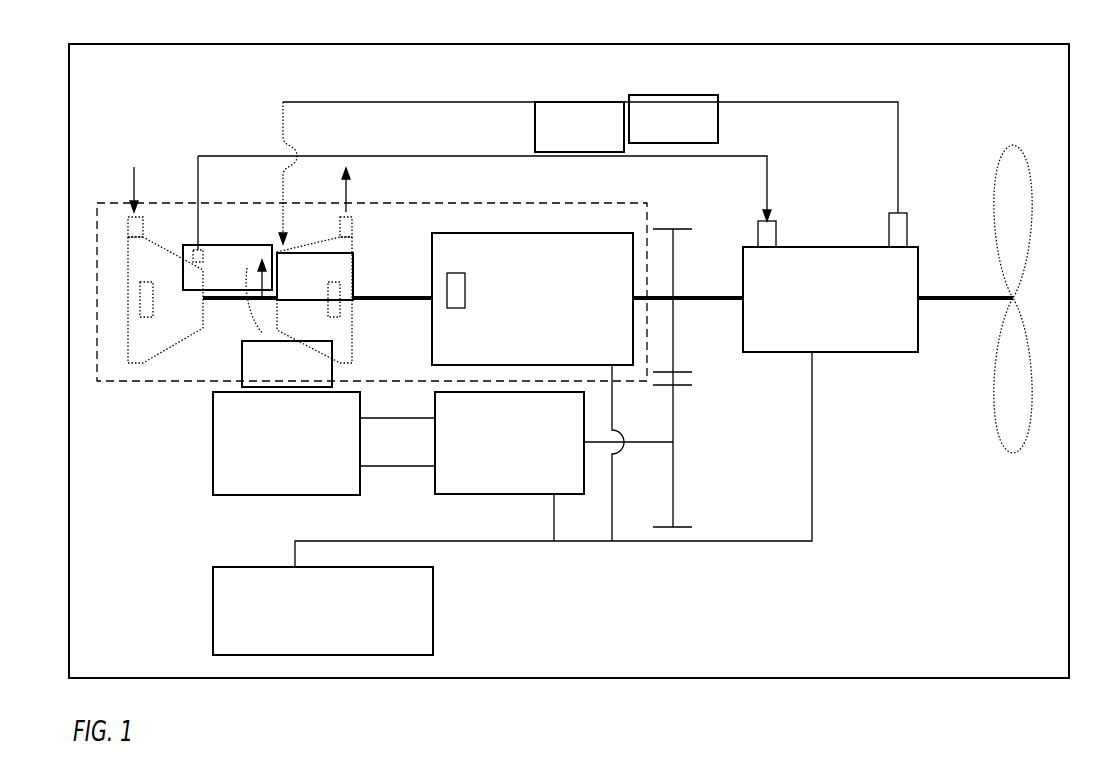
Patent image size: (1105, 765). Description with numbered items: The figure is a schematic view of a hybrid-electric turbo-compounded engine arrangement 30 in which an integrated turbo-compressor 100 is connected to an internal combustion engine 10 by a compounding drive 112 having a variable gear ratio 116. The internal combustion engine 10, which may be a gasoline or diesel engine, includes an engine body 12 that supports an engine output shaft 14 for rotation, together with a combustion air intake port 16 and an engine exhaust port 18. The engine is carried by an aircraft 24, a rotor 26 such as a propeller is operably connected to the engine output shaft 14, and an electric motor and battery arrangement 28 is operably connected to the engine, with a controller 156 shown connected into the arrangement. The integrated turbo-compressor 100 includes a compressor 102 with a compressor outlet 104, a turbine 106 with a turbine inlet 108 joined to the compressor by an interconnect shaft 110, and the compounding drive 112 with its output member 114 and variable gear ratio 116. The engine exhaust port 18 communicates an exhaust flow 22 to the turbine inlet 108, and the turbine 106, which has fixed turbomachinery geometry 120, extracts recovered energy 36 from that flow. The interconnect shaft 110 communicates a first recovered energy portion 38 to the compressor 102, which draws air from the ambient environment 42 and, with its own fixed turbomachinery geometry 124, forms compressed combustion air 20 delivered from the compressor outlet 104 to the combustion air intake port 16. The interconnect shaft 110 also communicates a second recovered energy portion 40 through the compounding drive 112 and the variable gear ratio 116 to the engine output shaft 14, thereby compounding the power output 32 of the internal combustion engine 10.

The internal combustion engine 10 is at (885, 364).
The engine body 12 is at (837, 327).
The engine output shaft 14 is at (978, 302).
The combustion air intake port 16 is at (778, 236).
The engine exhaust port 18 is at (907, 222).
The compressed combustion air 20 is at (537, 152).
The exhaust flow 22 is at (432, 102).
The aircraft 24 is at (862, 678).
The rotor 26 is at (1007, 417).
The electric motor and battery arrangement 28 is at (247, 485).
The hybrid-electric turbo-compounded engine arrangement 30 is at (143, 607).
The power output 32 is at (958, 332).
The recovered energy 36 is at (666, 153).
The first recovered energy portion 38 is at (393, 272).
The second recovered energy portion 40 is at (256, 275).
The ambient environment 42 is at (134, 21).
The integrated turbo-compressor 100 is at (178, 383).
The compressor 102 is at (162, 247).
The compressor outlet 104 is at (221, 243).
The turbine 106 is at (325, 291).
The turbine inlet 108 is at (291, 250).
The interconnect shaft 110 is at (223, 300).
The compounding drive 112 is at (601, 353).
The output member 114 is at (703, 297).
The variable gear ratio 116 is at (456, 273).
The fixed turbomachinery geometry 120 is at (318, 308).
The fixed turbomachinery geometry 124 is at (153, 305).
The controller 156 is at (433, 603).